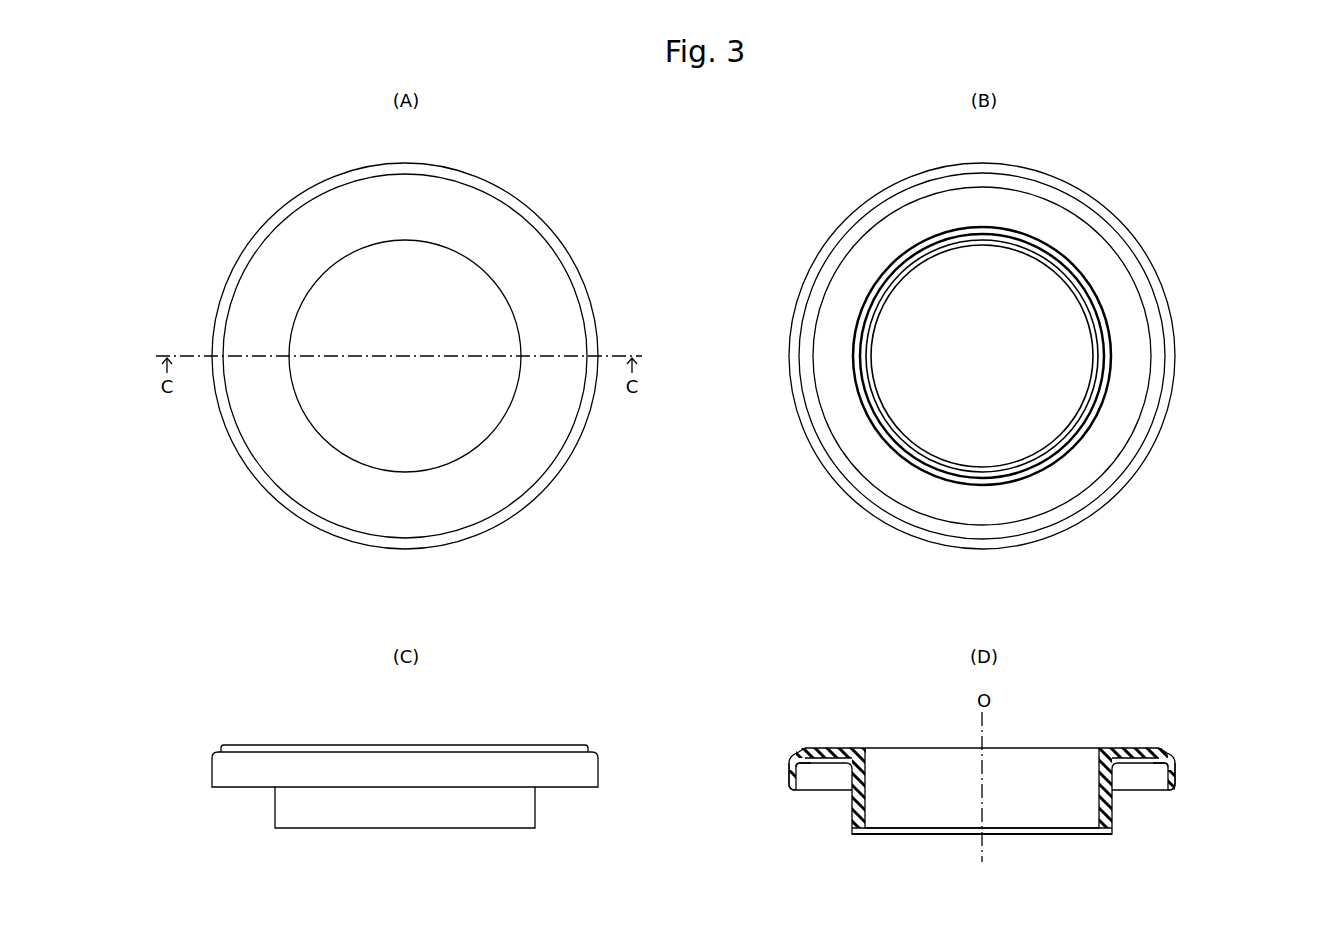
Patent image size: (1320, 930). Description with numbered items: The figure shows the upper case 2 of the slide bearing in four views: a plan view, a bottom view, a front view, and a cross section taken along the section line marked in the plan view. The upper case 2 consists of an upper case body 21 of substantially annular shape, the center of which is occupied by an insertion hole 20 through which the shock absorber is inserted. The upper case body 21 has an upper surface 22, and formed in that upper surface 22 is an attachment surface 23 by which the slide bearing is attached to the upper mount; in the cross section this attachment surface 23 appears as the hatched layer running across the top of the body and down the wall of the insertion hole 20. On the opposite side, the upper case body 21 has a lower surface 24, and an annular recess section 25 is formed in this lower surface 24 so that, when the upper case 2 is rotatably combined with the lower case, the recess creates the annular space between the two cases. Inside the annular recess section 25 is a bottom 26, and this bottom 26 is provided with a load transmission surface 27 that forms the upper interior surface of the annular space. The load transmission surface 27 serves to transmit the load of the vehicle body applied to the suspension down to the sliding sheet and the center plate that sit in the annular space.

The upper case 2 is at (587, 168).
The insertion hole 20 is at (344, 303).
The upper case body 21 is at (575, 264).
The upper surface 22 is at (473, 201).
The attachment surface 23 is at (491, 232).
The lower surface 24 is at (1156, 290).
The annular recess section 25 is at (1143, 361).
The bottom 26 is at (1185, 820).
The load transmission surface 27 is at (846, 792).